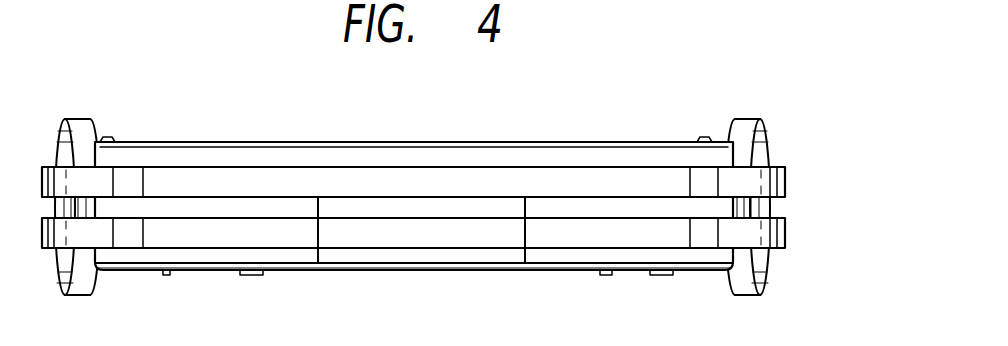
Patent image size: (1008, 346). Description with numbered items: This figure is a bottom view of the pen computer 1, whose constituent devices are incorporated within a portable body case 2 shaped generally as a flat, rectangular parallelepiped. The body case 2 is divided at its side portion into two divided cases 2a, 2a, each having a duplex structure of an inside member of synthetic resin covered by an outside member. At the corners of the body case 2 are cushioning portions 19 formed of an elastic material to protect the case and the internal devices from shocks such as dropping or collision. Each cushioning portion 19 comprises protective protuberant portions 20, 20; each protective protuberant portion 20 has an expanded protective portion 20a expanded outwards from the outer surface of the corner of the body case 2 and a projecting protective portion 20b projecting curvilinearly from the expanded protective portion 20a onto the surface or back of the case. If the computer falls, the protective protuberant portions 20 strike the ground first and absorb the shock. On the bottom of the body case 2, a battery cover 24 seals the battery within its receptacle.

The pen computer 1 is at (471, 196).
The body case 2 is at (414, 207).
The divided case 2a is at (277, 157).
The cushioning portion 19 is at (82, 120).
The protective protuberant portion 20 is at (471, 175).
The expanded protective portion 20a is at (447, 210).
The projecting protective portion 20b is at (767, 147).
The battery cover 24 is at (413, 258).